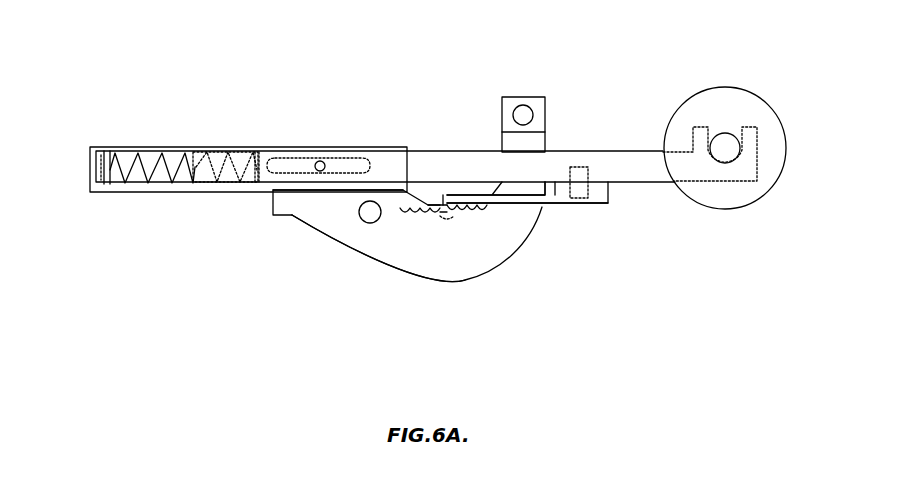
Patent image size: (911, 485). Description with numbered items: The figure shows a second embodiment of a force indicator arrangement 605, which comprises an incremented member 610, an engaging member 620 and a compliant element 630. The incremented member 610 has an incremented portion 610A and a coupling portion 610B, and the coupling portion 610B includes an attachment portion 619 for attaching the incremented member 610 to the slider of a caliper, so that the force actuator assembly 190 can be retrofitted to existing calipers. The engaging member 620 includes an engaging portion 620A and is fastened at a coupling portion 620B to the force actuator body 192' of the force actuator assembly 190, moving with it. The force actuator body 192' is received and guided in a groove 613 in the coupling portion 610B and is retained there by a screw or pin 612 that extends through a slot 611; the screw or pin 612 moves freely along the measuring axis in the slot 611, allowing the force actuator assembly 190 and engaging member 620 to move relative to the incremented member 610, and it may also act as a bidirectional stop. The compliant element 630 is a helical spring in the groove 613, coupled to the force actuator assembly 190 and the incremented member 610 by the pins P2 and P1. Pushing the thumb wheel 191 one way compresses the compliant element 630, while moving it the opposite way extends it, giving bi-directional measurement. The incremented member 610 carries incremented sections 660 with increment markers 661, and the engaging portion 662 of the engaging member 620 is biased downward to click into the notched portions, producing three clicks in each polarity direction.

The force indicator arrangement 605 is at (772, 66).
The compliant element 630 is at (156, 147).
The groove 613 is at (168, 153).
The slot 611 is at (282, 152).
The screw or pin 612 is at (320, 161).
The engaging portion 662 is at (445, 205).
The attachment portion 619 is at (522, 97).
The thumb wheel 191 is at (728, 208).
The force actuator body 192' is at (688, 199).
The force actuator assembly 190 is at (755, 270).
The pin P1 is at (106, 185).
The pin P2 is at (258, 172).
The incremented member 610 is at (215, 255).
The incremented portion 610A is at (410, 217).
The coupling portion 610B is at (307, 202).
The increment markers 661 is at (447, 213).
The incremented sections 660 is at (447, 220).
The engaging member 620 is at (655, 312).
The engaging portion 620A is at (522, 202).
The coupling portion 620B is at (607, 203).